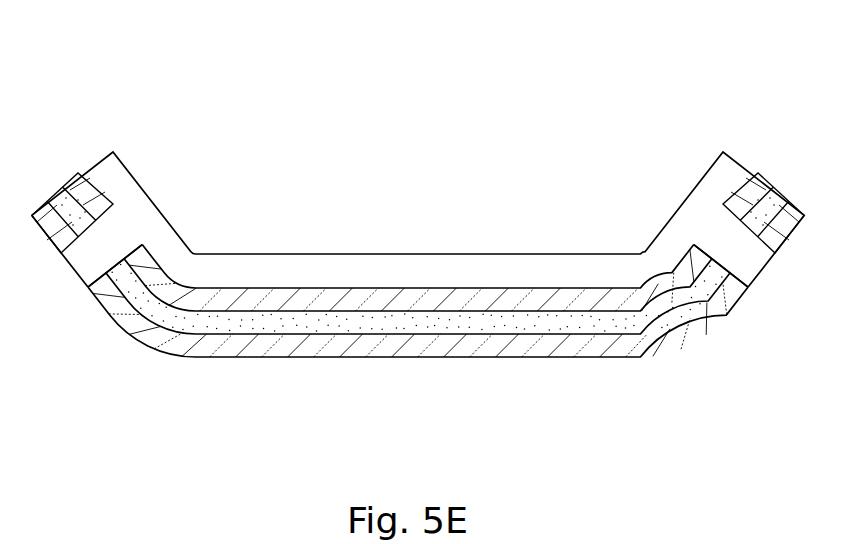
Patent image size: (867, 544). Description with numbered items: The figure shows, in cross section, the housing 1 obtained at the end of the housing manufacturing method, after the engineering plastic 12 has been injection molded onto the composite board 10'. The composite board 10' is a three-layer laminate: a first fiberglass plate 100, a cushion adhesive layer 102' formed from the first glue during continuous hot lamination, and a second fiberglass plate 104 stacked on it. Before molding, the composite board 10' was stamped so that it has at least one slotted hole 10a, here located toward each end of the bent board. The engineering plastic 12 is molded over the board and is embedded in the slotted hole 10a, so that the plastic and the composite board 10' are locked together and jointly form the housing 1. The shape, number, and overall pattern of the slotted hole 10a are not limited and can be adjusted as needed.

The housing 1 is at (418, 264).
The composite board 10' is at (418, 287).
The slotted hole 10a is at (108, 295).
The engineering plastic 12 is at (565, 277).
The first fiberglass plate 100 is at (402, 350).
The cushion adhesive layer 102' is at (418, 258).
The second fiberglass plate 104 is at (515, 300).